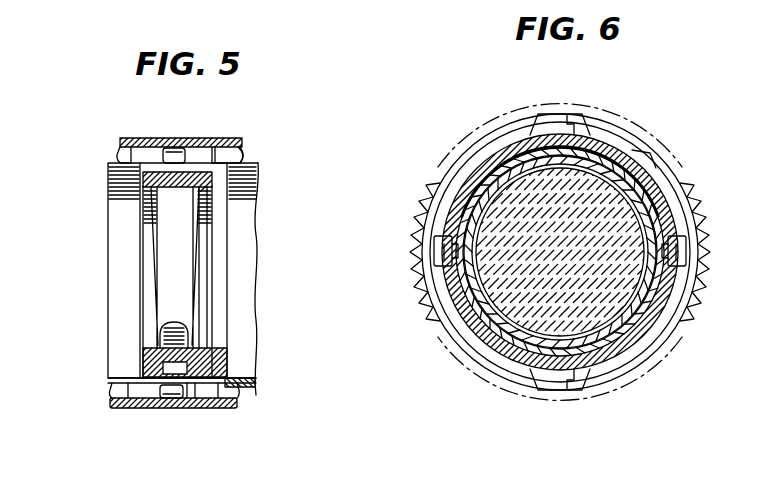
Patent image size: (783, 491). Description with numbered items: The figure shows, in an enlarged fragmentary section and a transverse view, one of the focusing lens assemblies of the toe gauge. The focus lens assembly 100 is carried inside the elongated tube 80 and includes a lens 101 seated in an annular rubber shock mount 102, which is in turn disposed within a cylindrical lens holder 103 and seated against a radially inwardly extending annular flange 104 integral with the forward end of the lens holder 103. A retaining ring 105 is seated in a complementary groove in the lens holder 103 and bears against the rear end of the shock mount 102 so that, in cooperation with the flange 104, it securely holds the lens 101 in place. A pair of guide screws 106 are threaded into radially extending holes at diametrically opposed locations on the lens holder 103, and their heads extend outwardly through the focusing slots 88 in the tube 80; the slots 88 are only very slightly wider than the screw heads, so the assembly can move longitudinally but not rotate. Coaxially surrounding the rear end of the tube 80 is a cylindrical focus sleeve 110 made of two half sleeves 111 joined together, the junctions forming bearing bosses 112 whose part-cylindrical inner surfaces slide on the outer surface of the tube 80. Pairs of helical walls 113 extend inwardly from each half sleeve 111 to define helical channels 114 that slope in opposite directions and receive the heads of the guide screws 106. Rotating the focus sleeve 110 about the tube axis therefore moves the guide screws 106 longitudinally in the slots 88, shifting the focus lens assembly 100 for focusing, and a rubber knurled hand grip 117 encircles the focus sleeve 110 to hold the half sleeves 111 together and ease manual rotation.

In FIG. 5, the tube 80 is at (254, 160).
In FIG. 6, the tube 80 is at (472, 176).
In FIG. 5, the focusing slots 88 is at (222, 150).
In FIG. 5, the focus lens assembly 100 is at (238, 259).
In FIG. 5, the lens 101 is at (150, 278).
In FIG. 6, the lens 101 is at (505, 300).
In FIG. 5, the annular rubber shock mount 102 is at (160, 333).
In FIG. 6, the annular rubber shock mount 102 is at (638, 300).
In FIG. 5, the lens holder 103 is at (227, 370).
In FIG. 6, the lens holder 103 is at (630, 320).
In FIG. 5, the annular flange 104 is at (140, 188).
In FIG. 5, the retaining ring 105 is at (210, 352).
In FIG. 5, the guide screws 106 is at (168, 150).
In FIG. 6, the guide screws 106 is at (690, 248).
In FIG. 5, the focus sleeve 110 is at (129, 140).
In FIG. 6, the half sleeves 111 is at (442, 212).
In FIG. 6, the bearing bosses 112 is at (585, 124).
In FIG. 5, the helical walls 113 is at (120, 152).
In FIG. 5, the helical channel 114 is at (184, 405).
In FIG. 6, the helical channel 114 is at (650, 150).
In FIG. 6, the rubber knurled hand grip 117 is at (494, 396).